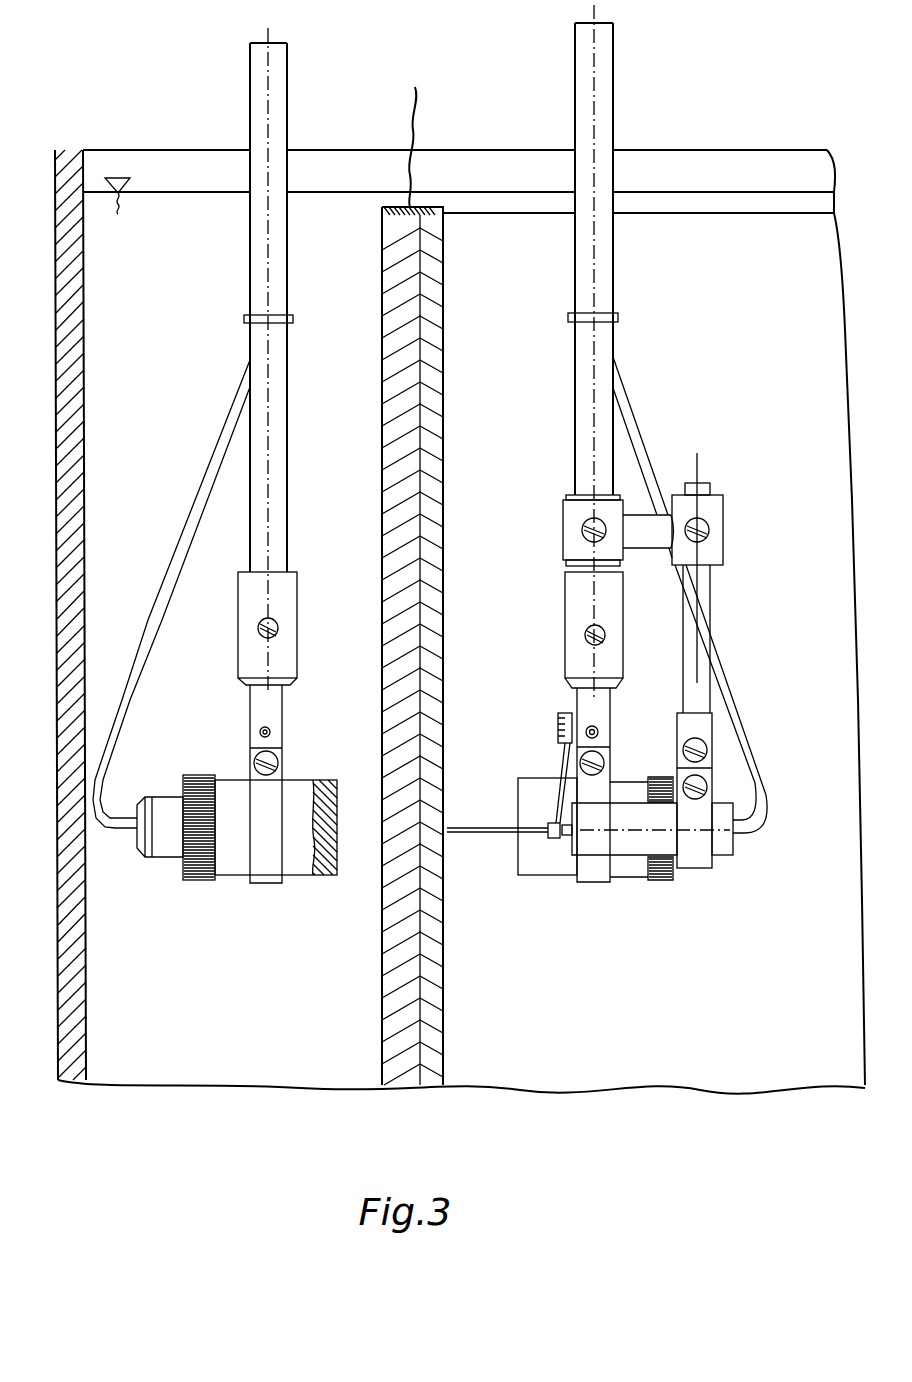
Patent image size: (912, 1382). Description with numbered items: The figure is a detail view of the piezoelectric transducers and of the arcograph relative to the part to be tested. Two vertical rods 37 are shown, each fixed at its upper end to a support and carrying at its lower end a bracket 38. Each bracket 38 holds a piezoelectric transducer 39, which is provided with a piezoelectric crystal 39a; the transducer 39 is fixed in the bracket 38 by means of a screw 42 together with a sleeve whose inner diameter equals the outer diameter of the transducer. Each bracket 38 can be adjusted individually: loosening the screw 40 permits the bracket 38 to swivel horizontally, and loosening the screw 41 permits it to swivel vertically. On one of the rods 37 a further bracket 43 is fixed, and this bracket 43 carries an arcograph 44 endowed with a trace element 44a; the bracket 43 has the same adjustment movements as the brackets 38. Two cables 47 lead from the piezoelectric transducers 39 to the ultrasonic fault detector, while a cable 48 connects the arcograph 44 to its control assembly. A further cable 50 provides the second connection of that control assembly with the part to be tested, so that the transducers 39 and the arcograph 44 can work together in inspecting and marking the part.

The rod 37 is at (280, 412).
The bracket 38 is at (257, 873).
The piezoelectric transducer 39 is at (305, 868).
The piezoelectric crystal 39a is at (317, 862).
The screw 40 is at (258, 628).
The screw 41 is at (258, 733).
The screw 42 is at (283, 770).
The bracket 43 is at (718, 528).
The arcograph 44 is at (726, 848).
The trace element 44a is at (490, 838).
The cable 47 is at (212, 478).
The cable 48 is at (740, 768).
The cable 50 is at (412, 163).